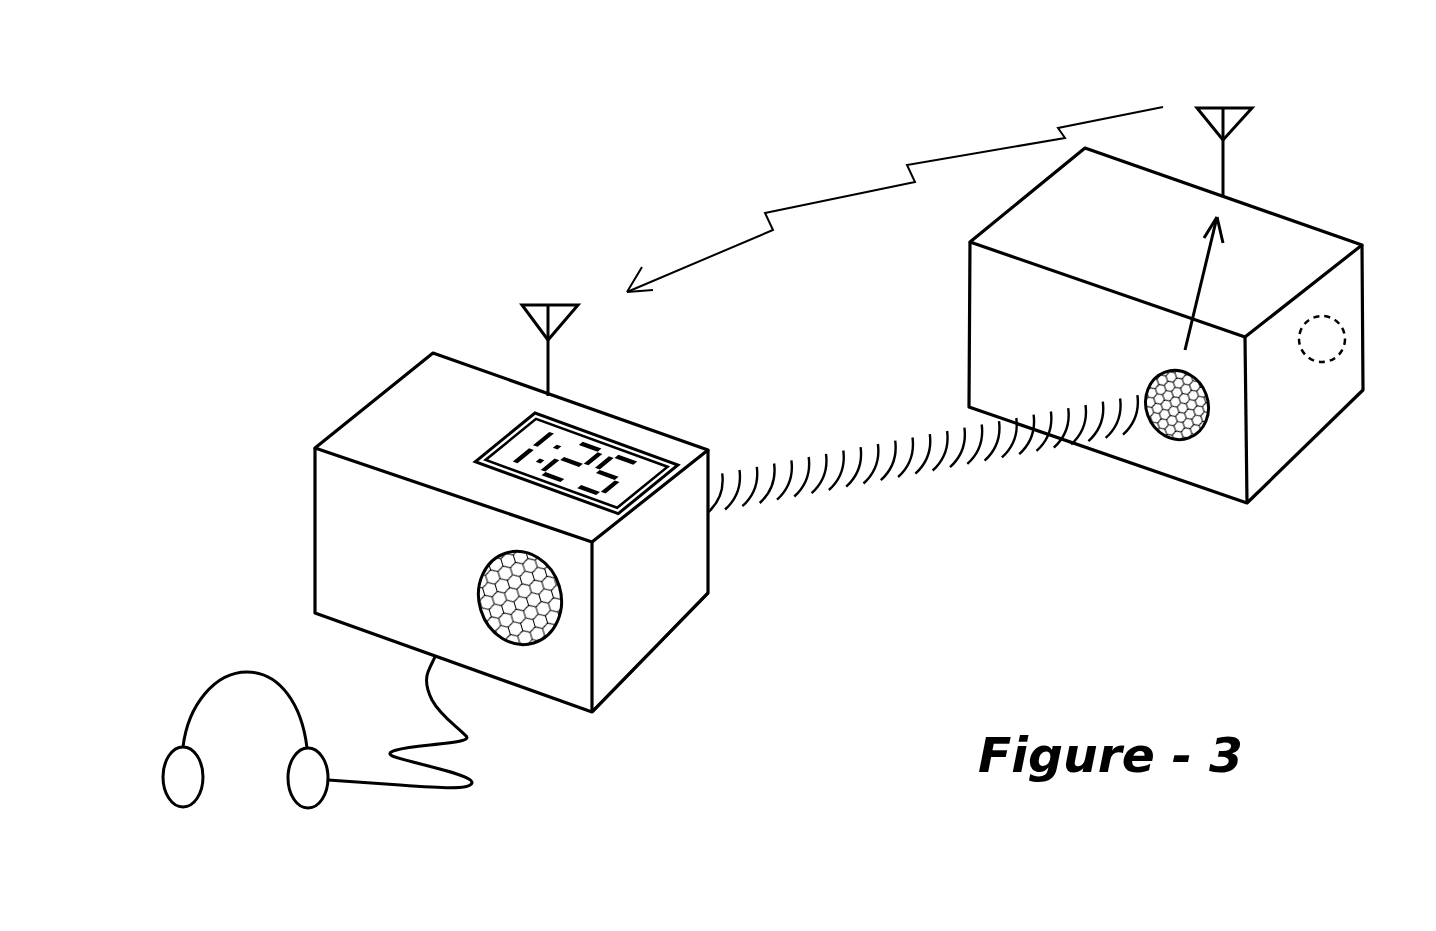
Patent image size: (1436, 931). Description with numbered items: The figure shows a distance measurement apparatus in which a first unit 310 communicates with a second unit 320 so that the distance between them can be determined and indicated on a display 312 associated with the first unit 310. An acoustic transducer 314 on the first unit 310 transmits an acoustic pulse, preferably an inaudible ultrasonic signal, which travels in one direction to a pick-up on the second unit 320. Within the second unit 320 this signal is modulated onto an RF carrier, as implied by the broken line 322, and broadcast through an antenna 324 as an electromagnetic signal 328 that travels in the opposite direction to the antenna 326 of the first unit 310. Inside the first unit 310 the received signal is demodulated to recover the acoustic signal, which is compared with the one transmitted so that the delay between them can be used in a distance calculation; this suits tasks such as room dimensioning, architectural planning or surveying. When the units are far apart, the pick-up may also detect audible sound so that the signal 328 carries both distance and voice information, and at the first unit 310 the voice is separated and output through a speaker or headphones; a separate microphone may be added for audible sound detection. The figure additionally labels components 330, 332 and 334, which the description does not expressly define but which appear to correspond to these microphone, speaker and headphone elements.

The first unit 310 is at (427, 393).
The display 312 is at (561, 436).
The acoustic transducer 314 is at (640, 640).
The second unit 320 is at (1307, 245).
The broken line 322 is at (1176, 283).
The antenna 324 is at (1225, 158).
The antenna 326 is at (537, 304).
The electromagnetic signal 328 is at (895, 199).
The button 330 is at (1312, 350).
The speaker 332 is at (482, 578).
The headphones 334 is at (317, 732).